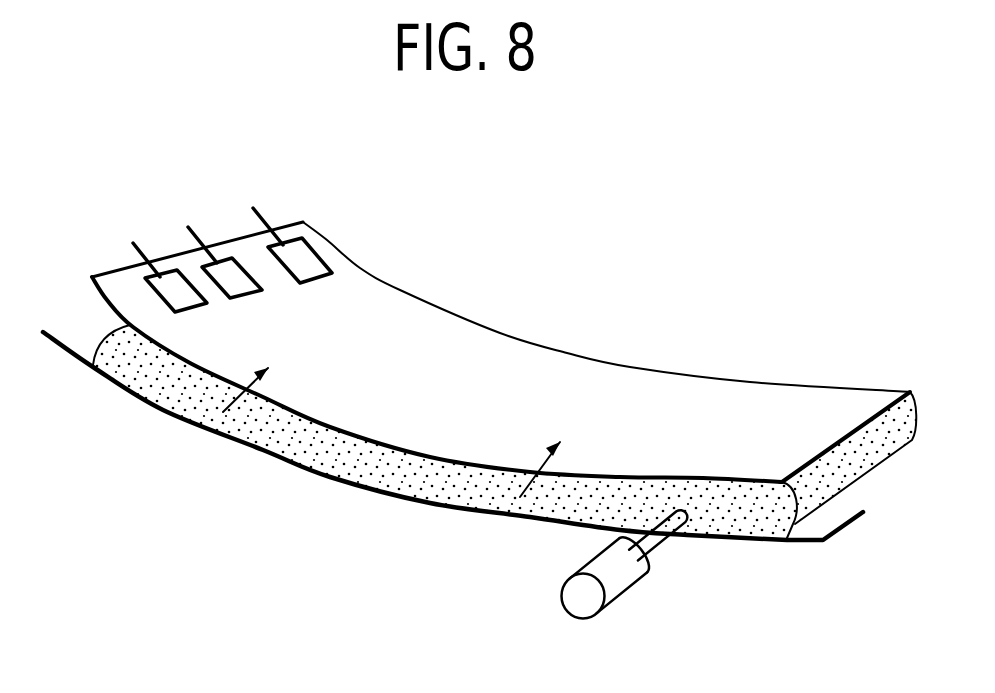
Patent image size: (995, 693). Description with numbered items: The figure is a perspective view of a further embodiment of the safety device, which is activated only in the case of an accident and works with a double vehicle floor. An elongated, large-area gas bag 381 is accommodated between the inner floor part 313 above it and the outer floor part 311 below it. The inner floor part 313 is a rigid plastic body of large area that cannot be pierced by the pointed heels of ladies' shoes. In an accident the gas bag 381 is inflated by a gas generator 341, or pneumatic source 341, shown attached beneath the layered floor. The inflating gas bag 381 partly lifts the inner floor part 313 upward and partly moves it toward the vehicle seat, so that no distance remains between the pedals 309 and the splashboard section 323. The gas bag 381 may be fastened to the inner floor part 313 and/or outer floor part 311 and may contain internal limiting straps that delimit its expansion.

The pedals 309 is at (292, 256).
The splashboard section 323 is at (318, 213).
The inner floor part 313 is at (560, 383).
The gas bag 381 is at (178, 382).
The outer floor part 311 is at (402, 497).
The gas generator 341 is at (620, 578).